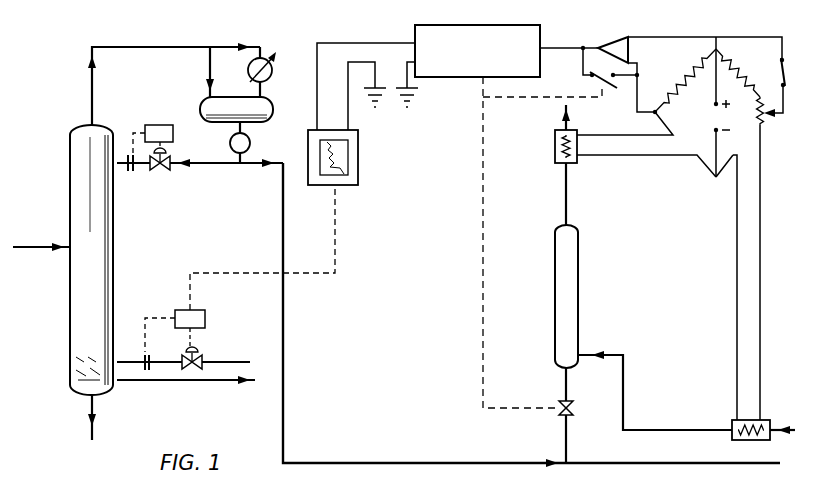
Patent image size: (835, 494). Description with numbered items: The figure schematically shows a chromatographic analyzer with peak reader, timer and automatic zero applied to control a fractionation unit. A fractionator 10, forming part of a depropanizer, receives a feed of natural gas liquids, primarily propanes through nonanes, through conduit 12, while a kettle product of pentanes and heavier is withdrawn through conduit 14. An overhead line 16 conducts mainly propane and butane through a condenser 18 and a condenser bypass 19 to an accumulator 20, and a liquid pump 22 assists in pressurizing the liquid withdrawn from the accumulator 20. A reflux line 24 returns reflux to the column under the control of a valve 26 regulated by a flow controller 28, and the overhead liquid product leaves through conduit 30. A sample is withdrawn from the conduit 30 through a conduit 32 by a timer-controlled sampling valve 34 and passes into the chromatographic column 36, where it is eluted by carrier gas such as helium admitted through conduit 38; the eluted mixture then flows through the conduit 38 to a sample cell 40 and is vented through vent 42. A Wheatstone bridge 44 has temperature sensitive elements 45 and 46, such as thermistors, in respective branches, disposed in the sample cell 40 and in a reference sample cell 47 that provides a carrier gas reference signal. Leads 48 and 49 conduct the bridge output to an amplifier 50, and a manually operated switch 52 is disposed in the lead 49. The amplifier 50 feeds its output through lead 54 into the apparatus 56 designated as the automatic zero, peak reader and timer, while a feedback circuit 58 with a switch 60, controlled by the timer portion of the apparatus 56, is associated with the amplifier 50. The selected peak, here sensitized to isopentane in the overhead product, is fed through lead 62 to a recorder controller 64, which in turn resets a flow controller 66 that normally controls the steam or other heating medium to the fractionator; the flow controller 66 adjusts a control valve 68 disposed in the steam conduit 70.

The fractionator 10 is at (113, 247).
The conduit 12 is at (48, 245).
The conduit 14 is at (92, 430).
The overhead line 16 is at (92, 76).
The condenser 18 is at (272, 72).
The condenser bypass 19 is at (209, 72).
The accumulator 20 is at (273, 104).
The liquid pump 22 is at (248, 138).
The reflux line 24 is at (210, 160).
The valve 26 is at (164, 168).
The flow controller 28 is at (168, 122).
The conduit 30 is at (283, 296).
The conduit 32 is at (570, 436).
The sampling valve 34 is at (570, 412).
The chromatographic column 36 is at (580, 250).
The conduit 38 is at (566, 208).
The sample cell 40 is at (555, 142).
The vent 42 is at (568, 112).
The Wheatstone bridge 44 is at (762, 137).
The temperature sensitive element 45 is at (555, 158).
The temperature sensitive element 46 is at (758, 441).
The sample cell 47 is at (734, 441).
The lead 48 is at (641, 66).
The lead 49 is at (718, 37).
The amplifier 50 is at (628, 38).
The manually operated switch 52 is at (780, 66).
The lead 54 is at (570, 44).
The apparatus 56 is at (414, 30).
The feedback circuit 58 is at (578, 69).
The switch 60 is at (602, 84).
The lead 62 is at (353, 38).
The recorder controller 64 is at (352, 181).
The flow controller 66 is at (205, 322).
The control valve 68 is at (194, 350).
The steam conduit 70 is at (245, 362).